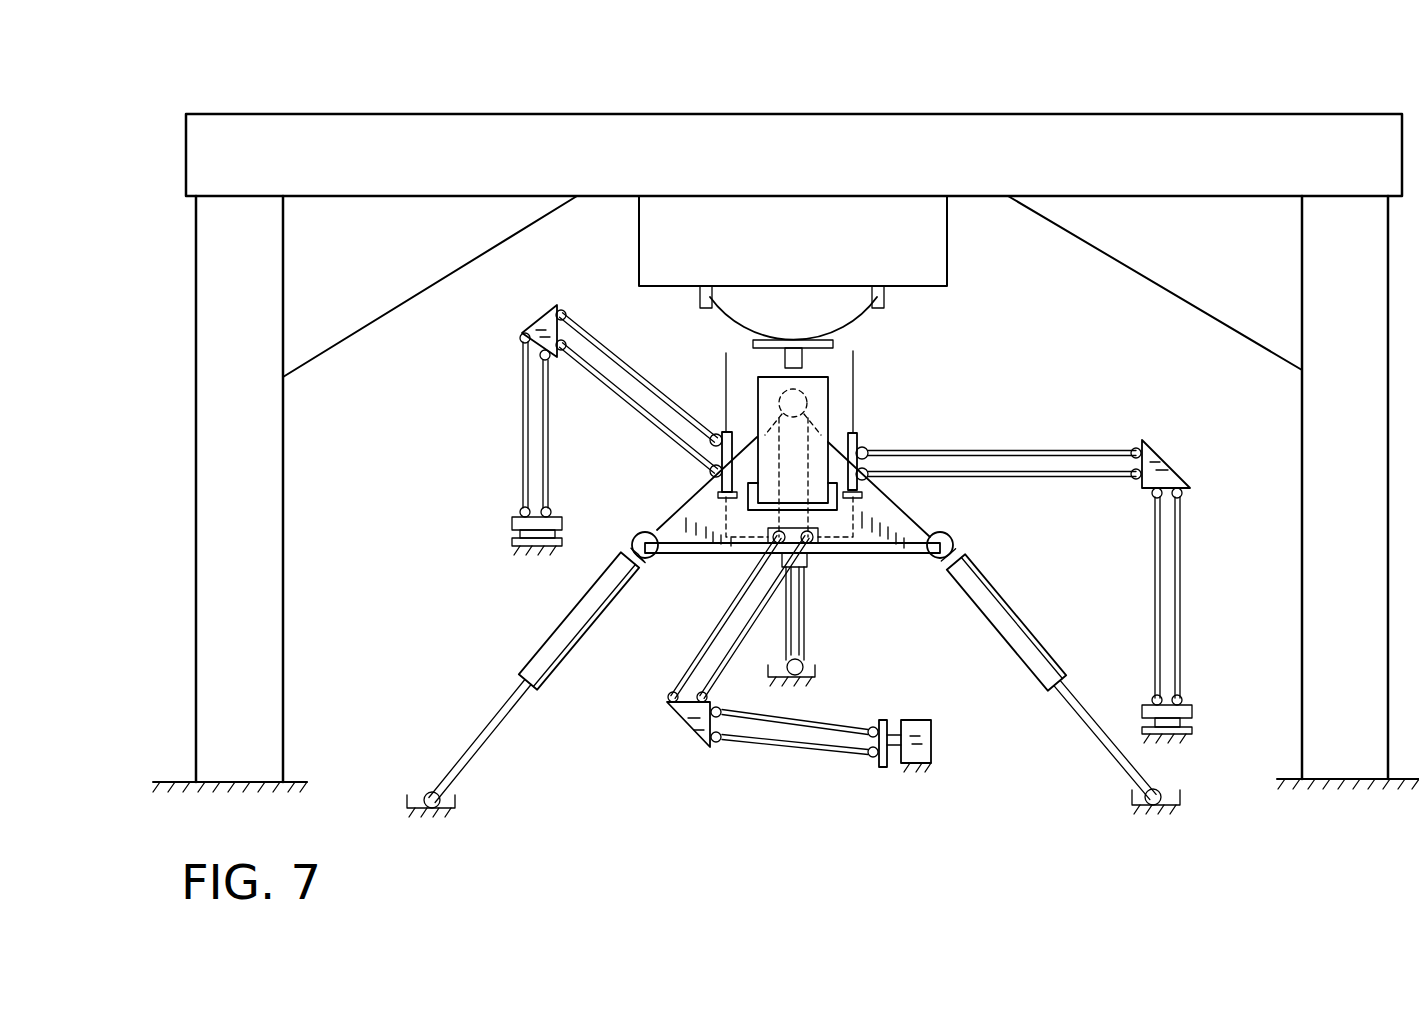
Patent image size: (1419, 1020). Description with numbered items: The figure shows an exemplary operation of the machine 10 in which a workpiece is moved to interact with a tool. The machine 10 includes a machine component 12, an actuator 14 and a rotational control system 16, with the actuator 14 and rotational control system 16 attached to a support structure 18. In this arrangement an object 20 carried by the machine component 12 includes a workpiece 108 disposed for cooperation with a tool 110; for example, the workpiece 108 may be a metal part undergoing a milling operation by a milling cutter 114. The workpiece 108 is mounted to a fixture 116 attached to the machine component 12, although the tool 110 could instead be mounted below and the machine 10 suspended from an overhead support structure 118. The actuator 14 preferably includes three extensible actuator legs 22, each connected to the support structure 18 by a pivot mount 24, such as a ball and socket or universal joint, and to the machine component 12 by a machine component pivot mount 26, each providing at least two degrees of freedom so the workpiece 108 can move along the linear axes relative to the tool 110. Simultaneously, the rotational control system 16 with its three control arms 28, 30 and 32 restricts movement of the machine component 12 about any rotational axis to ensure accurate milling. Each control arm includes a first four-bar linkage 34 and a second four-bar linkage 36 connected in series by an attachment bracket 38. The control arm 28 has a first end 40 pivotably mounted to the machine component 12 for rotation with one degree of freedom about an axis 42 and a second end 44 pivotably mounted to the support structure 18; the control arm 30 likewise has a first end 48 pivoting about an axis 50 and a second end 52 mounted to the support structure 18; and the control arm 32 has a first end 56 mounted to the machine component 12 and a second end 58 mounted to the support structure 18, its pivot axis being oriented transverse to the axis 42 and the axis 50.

The machine 10 is at (404, 452).
The machine component 12 is at (680, 520).
The actuator 14 is at (526, 621).
The rotational control system 16 is at (503, 408).
The support structure 18 is at (1368, 832).
The object 20 is at (840, 414).
The actuator leg 22 is at (538, 690).
The pivot mount 24 is at (458, 800).
The machine component pivot mount 26 is at (636, 536).
The control arm 28 is at (1132, 420).
The control arm 30 is at (590, 325).
The control arm 32 is at (742, 766).
The first four-bar linkage 34 is at (522, 455).
The second four-bar linkage 36 is at (603, 350).
The attachment bracket 38 is at (552, 315).
The first end 40 is at (870, 440).
The axis 42 is at (855, 362).
The second end 44 is at (1192, 712).
The first end 48 is at (715, 432).
The axis 50 is at (726, 353).
The second end 52 is at (512, 525).
The first end 56 is at (775, 553).
The second end 58 is at (810, 552).
The workpiece 108 is at (828, 384).
The tool 110 is at (860, 313).
The milling cutter 114 is at (768, 352).
The fixture 116 is at (928, 235).
The overhead support structure 118 is at (1130, 120).